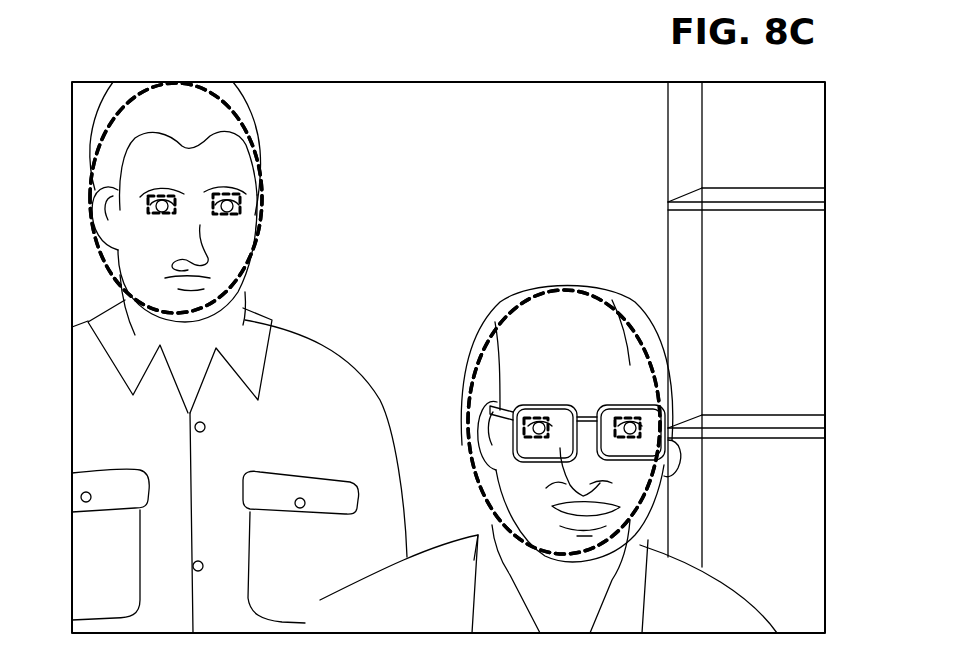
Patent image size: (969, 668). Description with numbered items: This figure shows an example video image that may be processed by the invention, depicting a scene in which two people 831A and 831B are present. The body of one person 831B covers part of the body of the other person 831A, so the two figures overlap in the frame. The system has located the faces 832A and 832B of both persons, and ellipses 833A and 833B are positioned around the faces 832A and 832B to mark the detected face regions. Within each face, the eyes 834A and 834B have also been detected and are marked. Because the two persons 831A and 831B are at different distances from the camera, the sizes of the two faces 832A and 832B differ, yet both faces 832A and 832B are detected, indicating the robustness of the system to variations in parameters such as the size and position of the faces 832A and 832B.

The person 831A is at (210, 72).
The face 832A is at (145, 152).
The ellipse 833A is at (97, 155).
The eyes 834A is at (222, 216).
The person 831B is at (467, 320).
The face 832B is at (546, 335).
The ellipse 833B is at (648, 350).
The eyes 834B is at (545, 440).